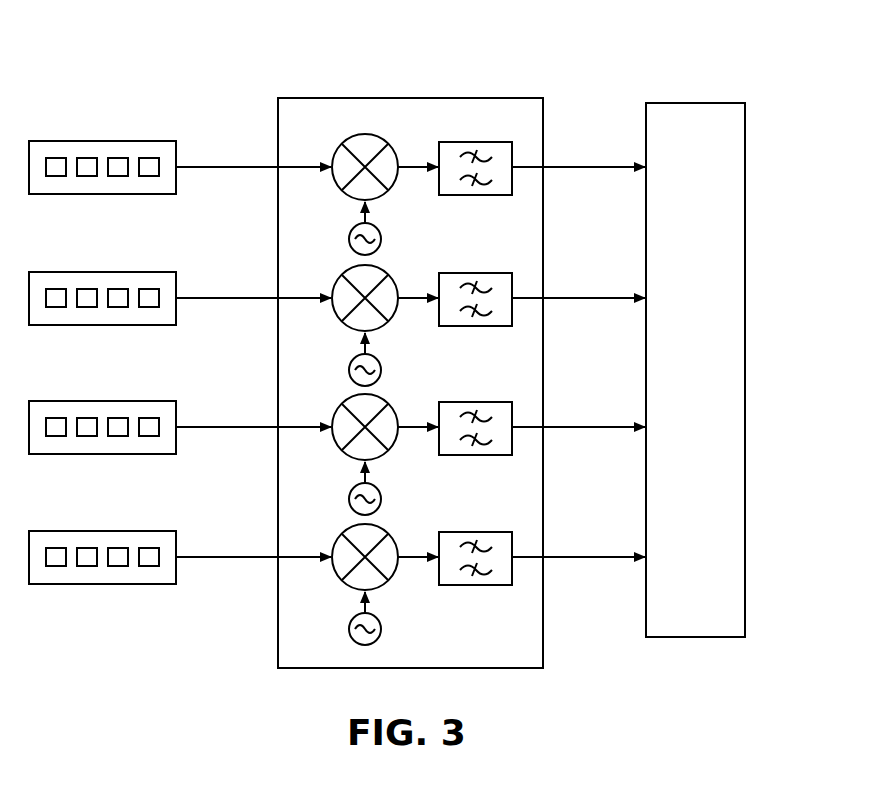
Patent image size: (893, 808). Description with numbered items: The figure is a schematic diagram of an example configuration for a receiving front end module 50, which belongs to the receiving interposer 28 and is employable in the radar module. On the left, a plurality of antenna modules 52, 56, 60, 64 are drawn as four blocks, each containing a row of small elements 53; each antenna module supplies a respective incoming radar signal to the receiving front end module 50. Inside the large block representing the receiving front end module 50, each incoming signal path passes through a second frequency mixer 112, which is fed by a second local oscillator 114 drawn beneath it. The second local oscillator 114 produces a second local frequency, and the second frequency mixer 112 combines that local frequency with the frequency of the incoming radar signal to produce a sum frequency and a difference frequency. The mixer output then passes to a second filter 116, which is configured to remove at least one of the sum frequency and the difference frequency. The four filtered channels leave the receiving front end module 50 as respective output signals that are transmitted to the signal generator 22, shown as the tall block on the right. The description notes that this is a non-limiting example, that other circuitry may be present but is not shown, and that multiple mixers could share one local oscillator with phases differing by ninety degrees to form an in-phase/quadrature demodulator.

The receiving interposer 28 is at (158, 50).
The antenna module 52 is at (88, 141).
The antenna element 53 is at (118, 160).
The antenna module 56 is at (88, 272).
The antenna module 60 is at (88, 401).
The antenna module 64 is at (88, 530).
The receiving front end module 50 is at (490, 98).
The second frequency mixer 112 is at (358, 137).
The second local oscillator 114 is at (356, 228).
The second filter 116 is at (476, 142).
The signal generator 22 is at (690, 103).